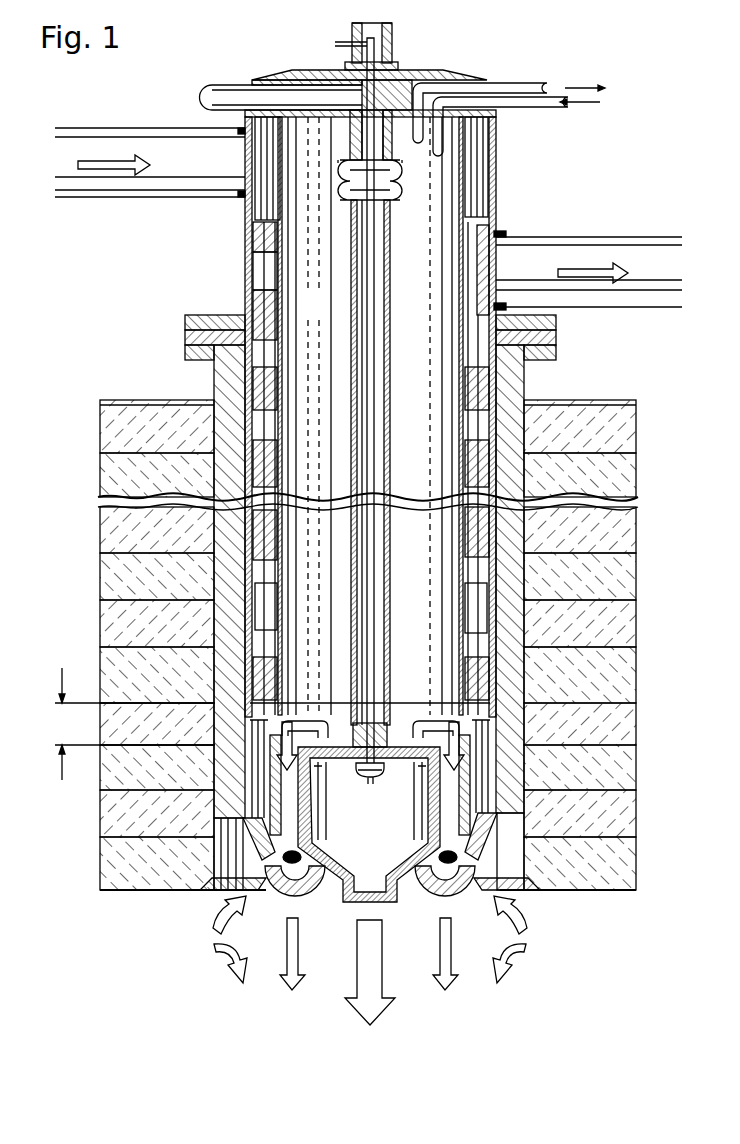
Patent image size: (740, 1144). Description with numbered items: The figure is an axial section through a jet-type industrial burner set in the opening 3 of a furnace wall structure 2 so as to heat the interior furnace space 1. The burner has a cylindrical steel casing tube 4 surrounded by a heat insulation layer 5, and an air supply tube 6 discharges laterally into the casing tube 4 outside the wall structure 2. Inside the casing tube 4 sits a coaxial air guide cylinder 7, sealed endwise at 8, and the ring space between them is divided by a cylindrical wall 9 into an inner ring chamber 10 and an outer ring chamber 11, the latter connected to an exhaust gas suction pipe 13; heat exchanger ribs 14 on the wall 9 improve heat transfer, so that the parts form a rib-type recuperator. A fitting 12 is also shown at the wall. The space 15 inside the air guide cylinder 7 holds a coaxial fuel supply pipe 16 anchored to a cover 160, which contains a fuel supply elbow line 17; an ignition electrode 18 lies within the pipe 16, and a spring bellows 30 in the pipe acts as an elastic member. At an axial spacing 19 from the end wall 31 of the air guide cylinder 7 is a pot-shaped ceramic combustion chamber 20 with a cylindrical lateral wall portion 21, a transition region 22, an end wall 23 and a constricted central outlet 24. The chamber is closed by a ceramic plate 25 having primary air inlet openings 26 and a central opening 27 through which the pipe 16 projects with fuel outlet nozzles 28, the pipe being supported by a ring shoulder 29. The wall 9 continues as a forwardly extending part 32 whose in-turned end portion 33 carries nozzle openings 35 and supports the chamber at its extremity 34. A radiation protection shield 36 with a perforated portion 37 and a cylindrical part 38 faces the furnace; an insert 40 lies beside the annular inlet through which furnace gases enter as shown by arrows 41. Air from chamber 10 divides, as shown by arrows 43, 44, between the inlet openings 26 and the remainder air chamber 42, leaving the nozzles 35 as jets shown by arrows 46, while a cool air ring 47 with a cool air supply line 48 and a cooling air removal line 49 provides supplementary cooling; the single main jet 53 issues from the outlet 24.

The interior furnace space 1 is at (561, 1015).
The wall structure 2 is at (125, 430).
The opening 3 is at (213, 430).
The casing tube 4 is at (482, 352).
The heat insulation layer 5 is at (514, 423).
The air supply tube 6 is at (100, 133).
The air guide cylinder 7 is at (278, 204).
The seal 8 is at (481, 131).
The cylindrical wall 9 is at (256, 242).
The ring chamber 10 is at (270, 274).
The ring chamber 11 is at (254, 350).
The outlet fitting 12 is at (484, 214).
The exhaust gas suction pipe 13 is at (618, 243).
The heat exchanger ribs 14 is at (256, 302).
The space 15 is at (304, 312).
The fuel supply pipe 16 is at (352, 390).
The fuel supply elbow line 17 is at (230, 86).
The ignition electrode 18 is at (367, 426).
The axial spacing 19 is at (132, 724).
The ceramic combustion chamber 20 is at (290, 785).
The lateral wall portion 21 is at (430, 814).
The transition region 22 is at (425, 848).
The end wall 23 is at (315, 866).
The central outlet 24 is at (364, 902).
The ceramic plate 25 is at (404, 723).
The primary air inlet openings 26 is at (410, 722).
The opening 27 is at (350, 760).
The fuel outlet nozzles 28 is at (391, 762).
The ring shoulder 29 is at (345, 730).
The spring bellows 30 is at (405, 180).
The end wall 31 is at (450, 720).
The forwardly extending part 32 is at (481, 835).
The in-turned end portion 33 is at (270, 892).
The extremity 34 is at (418, 892).
The nozzle openings 35 is at (452, 892).
The radiation protection shield 36 is at (515, 893).
The shield portion 37 is at (313, 890).
The cylindrical part 38 is at (482, 852).
The insert 40 is at (228, 838).
The arrows 41 is at (214, 934).
The remainder air chamber 42 is at (452, 797).
The arrows 43 is at (293, 713).
The arrows 44 is at (318, 717).
The arrows 46 is at (287, 962).
The cool air ring 47 is at (224, 884).
The cool air supply line 48 is at (556, 97).
The cooling air removal line 49 is at (513, 83).
The main jet 53 is at (358, 968).
The cover 160 is at (312, 74).